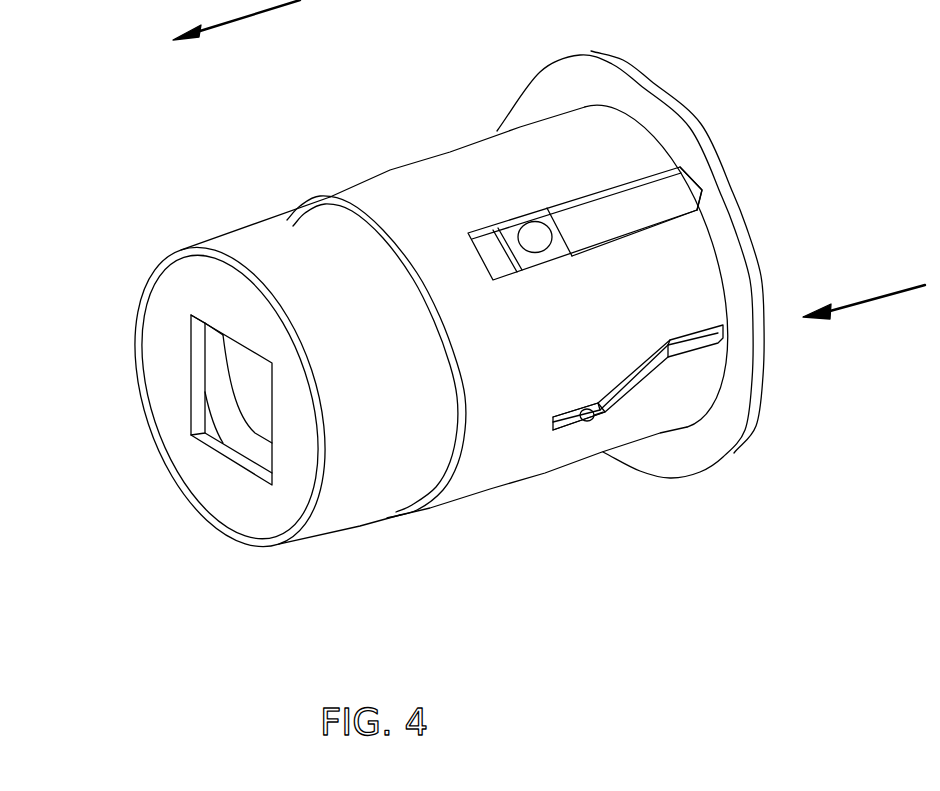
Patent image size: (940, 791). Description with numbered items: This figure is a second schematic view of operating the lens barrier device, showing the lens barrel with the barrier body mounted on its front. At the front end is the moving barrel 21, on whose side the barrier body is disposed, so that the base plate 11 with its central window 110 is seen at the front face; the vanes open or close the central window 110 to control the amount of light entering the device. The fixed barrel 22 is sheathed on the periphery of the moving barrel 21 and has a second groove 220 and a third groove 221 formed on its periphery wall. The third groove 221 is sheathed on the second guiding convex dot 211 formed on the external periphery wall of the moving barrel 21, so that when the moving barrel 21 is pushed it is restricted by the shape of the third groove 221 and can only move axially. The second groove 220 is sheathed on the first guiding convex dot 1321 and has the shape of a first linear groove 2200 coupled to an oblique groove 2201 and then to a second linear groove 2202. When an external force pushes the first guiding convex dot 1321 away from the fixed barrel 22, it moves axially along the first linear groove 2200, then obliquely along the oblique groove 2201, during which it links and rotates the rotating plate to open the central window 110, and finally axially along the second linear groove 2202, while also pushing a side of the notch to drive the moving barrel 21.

The base plate 11 is at (245, 512).
The central window 110 is at (212, 427).
The moving barrel 21 is at (258, 223).
The fixed barrel 22 is at (364, 176).
The second guiding convex dot 211 is at (525, 213).
The third groove 221 is at (677, 190).
The second groove 220 is at (755, 248).
The first linear groove 2200 is at (725, 343).
The oblique groove 2201 is at (648, 387).
The second linear groove 2202 is at (553, 430).
The first guiding convex dot 1321 is at (586, 422).